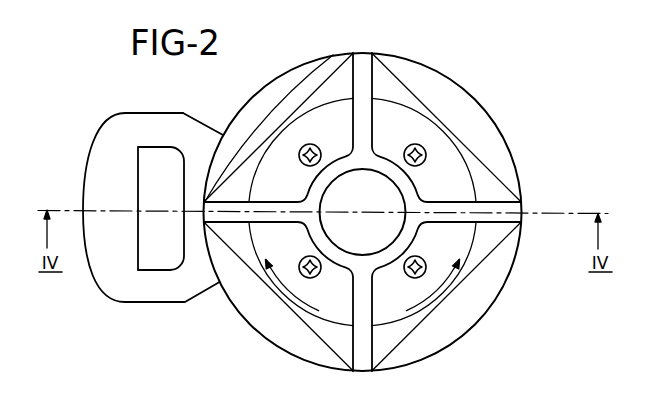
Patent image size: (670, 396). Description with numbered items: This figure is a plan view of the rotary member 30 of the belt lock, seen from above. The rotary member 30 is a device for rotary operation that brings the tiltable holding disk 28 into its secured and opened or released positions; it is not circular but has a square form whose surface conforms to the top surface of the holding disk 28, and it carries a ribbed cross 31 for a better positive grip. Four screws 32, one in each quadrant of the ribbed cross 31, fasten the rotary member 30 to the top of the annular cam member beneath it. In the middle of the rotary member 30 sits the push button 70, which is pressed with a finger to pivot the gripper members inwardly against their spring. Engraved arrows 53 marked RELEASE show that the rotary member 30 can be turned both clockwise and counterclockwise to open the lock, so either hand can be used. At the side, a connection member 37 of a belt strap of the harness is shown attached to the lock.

The holding disk 28 is at (490, 129).
The rotary member 30 is at (308, 123).
The ribbed cross 31 is at (355, 74).
The screws 32 is at (419, 144).
The connection member 37 is at (147, 288).
The engraved arrows 53 is at (441, 293).
The push button 70 is at (393, 194).